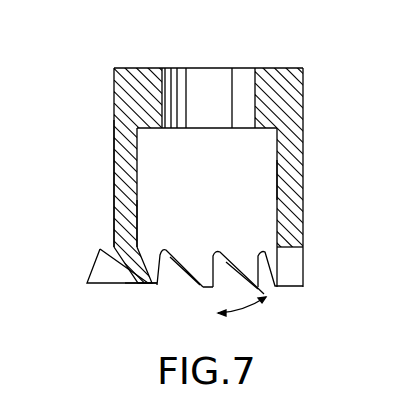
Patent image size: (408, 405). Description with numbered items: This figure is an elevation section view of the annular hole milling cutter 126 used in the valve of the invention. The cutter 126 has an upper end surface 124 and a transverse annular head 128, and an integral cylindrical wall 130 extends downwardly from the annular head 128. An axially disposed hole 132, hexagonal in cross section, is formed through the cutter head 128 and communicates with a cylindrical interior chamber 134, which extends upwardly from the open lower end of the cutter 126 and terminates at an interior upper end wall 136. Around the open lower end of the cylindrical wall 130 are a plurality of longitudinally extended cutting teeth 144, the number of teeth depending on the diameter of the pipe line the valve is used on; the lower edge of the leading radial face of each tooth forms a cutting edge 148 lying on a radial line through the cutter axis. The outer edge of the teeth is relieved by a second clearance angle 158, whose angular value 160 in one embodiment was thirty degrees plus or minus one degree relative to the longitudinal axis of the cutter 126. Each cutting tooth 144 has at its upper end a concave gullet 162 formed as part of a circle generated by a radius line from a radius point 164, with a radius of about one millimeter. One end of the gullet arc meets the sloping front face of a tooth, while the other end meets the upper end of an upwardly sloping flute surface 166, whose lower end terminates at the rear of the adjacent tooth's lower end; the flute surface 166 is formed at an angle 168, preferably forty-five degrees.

The upper end surface 124 is at (143, 67).
The annular hole milling cutter 126 is at (114, 145).
The transverse annular head 128 is at (132, 85).
The cylindrical wall 130 is at (123, 170).
The axially disposed hole 132 is at (257, 93).
The cylindrical interior chamber 134 is at (282, 186).
The interior upper end wall 136 is at (279, 133).
The cutting teeth 144 is at (153, 256).
The cutting edge 148 is at (293, 293).
The outer edge second clearance angle 158 is at (135, 285).
The angular value of the second clearance angle 160 is at (98, 250).
The concave gullet 162 is at (168, 277).
The radius point 164 is at (218, 322).
The flute surface 166 is at (236, 276).
The flute surface angle 168 is at (243, 309).